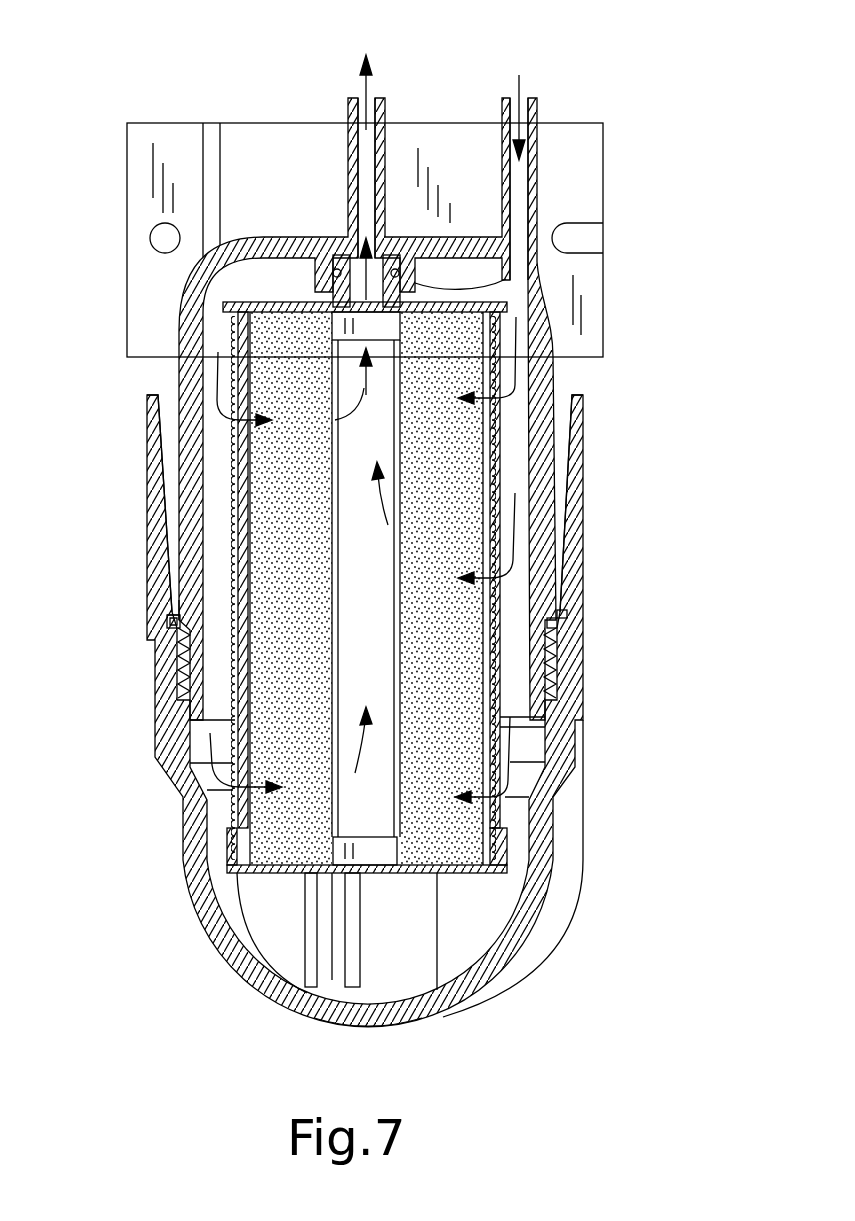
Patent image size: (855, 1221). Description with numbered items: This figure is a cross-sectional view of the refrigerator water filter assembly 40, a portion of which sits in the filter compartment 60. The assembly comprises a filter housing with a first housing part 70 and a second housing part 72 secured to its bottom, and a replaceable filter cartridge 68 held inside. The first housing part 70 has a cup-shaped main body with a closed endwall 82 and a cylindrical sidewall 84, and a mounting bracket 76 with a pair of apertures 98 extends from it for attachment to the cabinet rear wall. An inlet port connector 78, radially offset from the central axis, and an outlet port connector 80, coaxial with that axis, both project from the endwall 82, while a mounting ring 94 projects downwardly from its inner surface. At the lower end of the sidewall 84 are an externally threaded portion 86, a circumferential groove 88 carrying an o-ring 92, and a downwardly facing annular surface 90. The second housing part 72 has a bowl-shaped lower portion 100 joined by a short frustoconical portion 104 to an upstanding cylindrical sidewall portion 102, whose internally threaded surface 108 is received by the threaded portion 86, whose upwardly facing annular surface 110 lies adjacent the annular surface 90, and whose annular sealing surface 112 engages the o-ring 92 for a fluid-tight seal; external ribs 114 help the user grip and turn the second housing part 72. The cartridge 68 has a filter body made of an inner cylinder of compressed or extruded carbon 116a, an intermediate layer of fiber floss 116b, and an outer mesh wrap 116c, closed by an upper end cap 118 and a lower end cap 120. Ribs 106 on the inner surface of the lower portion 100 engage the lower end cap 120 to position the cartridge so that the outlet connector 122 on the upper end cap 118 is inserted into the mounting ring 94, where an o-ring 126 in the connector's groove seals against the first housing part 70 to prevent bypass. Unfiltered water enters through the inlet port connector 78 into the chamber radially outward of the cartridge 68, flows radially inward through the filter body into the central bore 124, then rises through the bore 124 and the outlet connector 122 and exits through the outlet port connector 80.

The filter assembly 40 is at (616, 384).
The filter compartment 60 is at (135, 764).
The replaceable filter cartridge 68 is at (455, 636).
The first housing part 70 is at (471, 102).
The second housing part 72 is at (132, 972).
The mounting bracket 76 is at (612, 152).
The inlet port connector 78 is at (540, 110).
The outlet port connector 80 is at (346, 106).
The endwall 82 is at (284, 236).
The cylindrical sidewall 84 is at (560, 438).
The externally threaded portion 86 is at (543, 718).
The circumferential groove 88 is at (192, 618).
The downwardly facing annular surface 90 is at (167, 600).
The o-ring 92 is at (182, 627).
The mounting ring 94 is at (510, 280).
The apertures 98 is at (150, 240).
The bowl-shaped lower portion 100 is at (413, 1023).
The upstanding cylindrical sidewall portion 102 is at (580, 560).
The frustoconical portion 104 is at (560, 783).
The ribs 106 is at (347, 977).
The internally threaded surface 108 is at (543, 670).
The upwardly facing annular surface 110 is at (173, 613).
The annular sealing surface 112 is at (183, 660).
The ribs 114 is at (573, 883).
The inner cylinder of compressed or extruded carbon 116a is at (297, 565).
The intermediate layer of fiber floss 116b is at (247, 452).
The outer mesh wrap 116c is at (230, 662).
The upper end cap 118 is at (510, 343).
The lower end cap 120 is at (460, 937).
The outlet connector 122 is at (332, 292).
The central bore 124 is at (360, 793).
The o-ring 126 is at (386, 250).